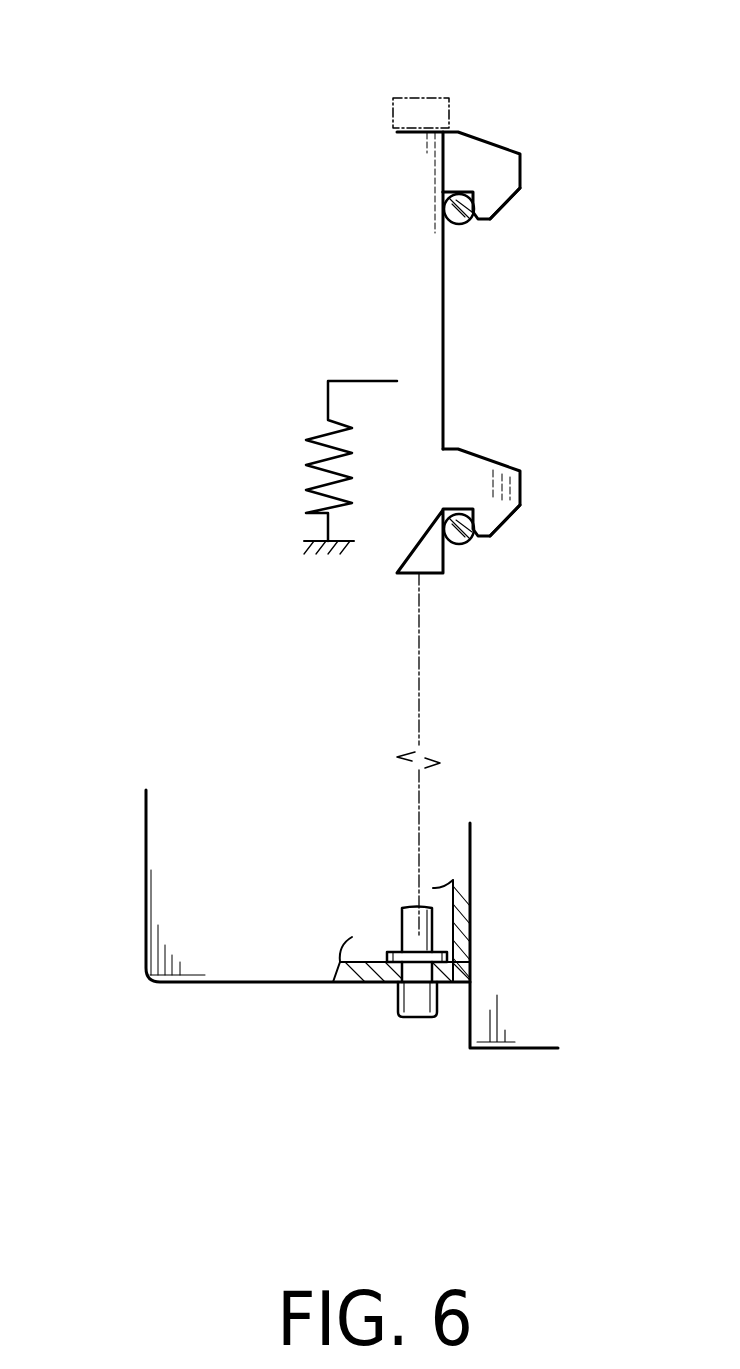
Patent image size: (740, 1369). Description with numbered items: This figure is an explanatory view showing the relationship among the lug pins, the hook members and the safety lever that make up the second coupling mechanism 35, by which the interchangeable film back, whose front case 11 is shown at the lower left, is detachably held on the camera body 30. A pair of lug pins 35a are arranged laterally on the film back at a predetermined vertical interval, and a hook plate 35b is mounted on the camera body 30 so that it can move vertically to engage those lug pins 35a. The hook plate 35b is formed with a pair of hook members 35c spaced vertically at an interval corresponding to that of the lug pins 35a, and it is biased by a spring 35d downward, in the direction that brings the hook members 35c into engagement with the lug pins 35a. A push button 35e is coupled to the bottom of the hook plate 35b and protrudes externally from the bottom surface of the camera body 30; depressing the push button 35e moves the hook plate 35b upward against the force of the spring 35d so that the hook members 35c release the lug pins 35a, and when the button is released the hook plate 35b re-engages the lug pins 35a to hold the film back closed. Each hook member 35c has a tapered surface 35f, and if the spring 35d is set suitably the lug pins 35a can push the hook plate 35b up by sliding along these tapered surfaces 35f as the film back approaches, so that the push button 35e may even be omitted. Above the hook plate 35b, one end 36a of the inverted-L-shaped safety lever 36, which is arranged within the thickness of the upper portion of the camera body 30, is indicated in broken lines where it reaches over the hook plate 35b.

The front case 11 is at (543, 1048).
The camera body 30 is at (146, 892).
The second coupling mechanism 35 is at (262, 82).
The lug pin 35a is at (455, 220).
The hook plate 35b is at (403, 260).
The hook member 35c is at (467, 172).
The spring 35d is at (307, 483).
The push button 35e is at (412, 996).
The tapered surface 35f is at (513, 200).
The safety lever 36 is at (447, 122).
The one end of the safety lever 36a is at (440, 110).